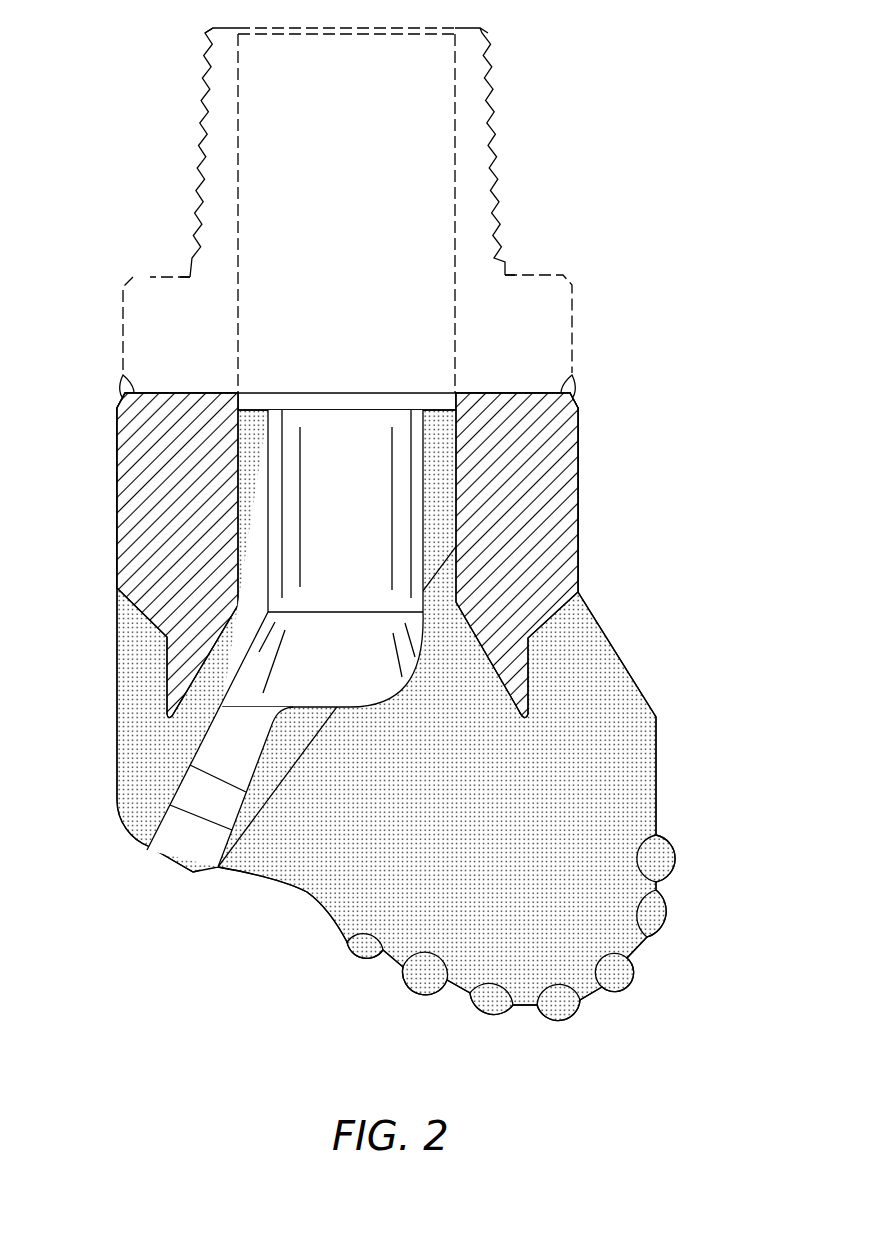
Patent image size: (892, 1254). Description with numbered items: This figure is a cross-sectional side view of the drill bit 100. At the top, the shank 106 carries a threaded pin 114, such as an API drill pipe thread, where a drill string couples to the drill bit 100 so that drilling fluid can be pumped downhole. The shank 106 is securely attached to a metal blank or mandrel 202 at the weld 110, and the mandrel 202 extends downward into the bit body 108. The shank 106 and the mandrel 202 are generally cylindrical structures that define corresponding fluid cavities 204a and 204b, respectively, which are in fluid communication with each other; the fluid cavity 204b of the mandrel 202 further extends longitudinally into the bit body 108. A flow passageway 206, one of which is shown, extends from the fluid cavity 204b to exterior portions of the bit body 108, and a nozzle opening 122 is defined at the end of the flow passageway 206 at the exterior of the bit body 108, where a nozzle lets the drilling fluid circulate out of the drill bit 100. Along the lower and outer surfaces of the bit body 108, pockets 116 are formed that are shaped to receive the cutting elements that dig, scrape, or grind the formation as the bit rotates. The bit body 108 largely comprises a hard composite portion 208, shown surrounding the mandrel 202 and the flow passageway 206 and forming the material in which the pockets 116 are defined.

The drill bit 100 is at (158, 101).
The shank 106 is at (105, 312).
The bit body 108 is at (92, 657).
The weld 110 is at (580, 398).
The threaded pin 114 is at (498, 182).
The pockets 116 is at (648, 845).
The nozzle openings 122 is at (210, 868).
The mandrel 202 is at (196, 520).
The fluid cavity of the shank 204a is at (370, 224).
The fluid cavity of the mandrel 204b is at (370, 520).
The flow passageway 206 is at (205, 859).
The hard composite portion 208 is at (526, 826).